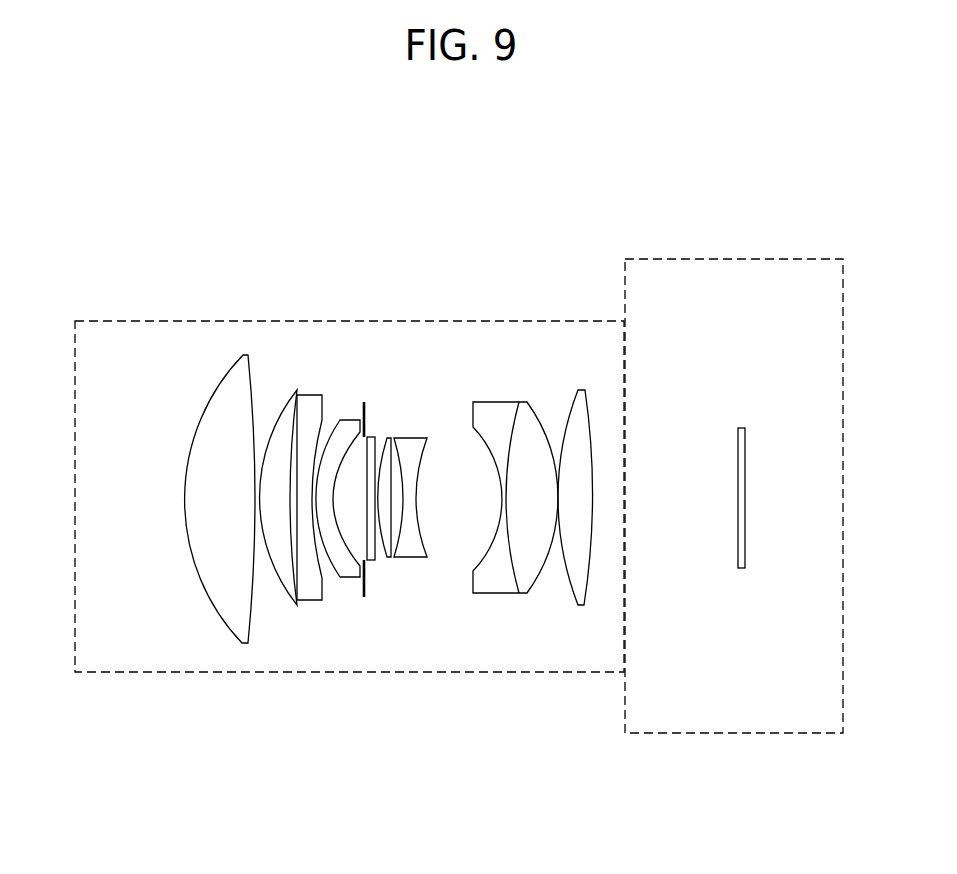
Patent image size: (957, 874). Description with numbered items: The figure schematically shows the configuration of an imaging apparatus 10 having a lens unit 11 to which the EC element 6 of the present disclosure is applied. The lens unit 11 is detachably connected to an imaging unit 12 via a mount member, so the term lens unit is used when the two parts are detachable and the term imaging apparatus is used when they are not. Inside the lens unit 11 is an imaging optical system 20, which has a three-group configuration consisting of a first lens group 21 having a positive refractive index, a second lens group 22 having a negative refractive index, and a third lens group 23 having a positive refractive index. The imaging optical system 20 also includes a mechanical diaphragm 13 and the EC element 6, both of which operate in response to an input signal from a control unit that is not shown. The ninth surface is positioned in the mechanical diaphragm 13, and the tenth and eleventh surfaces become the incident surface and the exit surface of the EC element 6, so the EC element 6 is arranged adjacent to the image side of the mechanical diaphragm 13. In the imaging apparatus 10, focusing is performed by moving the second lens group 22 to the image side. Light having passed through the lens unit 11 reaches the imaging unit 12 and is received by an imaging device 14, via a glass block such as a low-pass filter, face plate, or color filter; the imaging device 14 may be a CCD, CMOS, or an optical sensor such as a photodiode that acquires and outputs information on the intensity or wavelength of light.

The imaging apparatus 10 is at (73, 205).
The lens unit 11 is at (383, 321).
The imaging unit 12 is at (683, 259).
The mechanical diaphragm 13 is at (364, 400).
The EC element 6 is at (372, 436).
The imaging device 14 is at (745, 568).
The imaging optical system 20 is at (592, 780).
The first lens group 21 is at (186, 722).
The second lens group 22 is at (393, 722).
The third lens group 23 is at (432, 722).